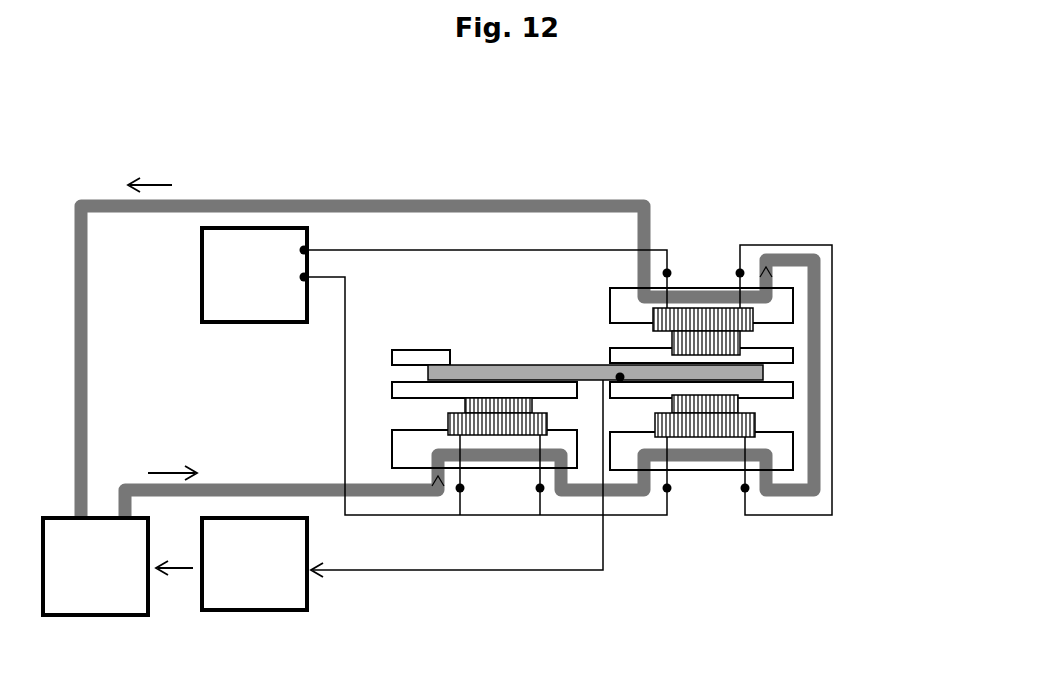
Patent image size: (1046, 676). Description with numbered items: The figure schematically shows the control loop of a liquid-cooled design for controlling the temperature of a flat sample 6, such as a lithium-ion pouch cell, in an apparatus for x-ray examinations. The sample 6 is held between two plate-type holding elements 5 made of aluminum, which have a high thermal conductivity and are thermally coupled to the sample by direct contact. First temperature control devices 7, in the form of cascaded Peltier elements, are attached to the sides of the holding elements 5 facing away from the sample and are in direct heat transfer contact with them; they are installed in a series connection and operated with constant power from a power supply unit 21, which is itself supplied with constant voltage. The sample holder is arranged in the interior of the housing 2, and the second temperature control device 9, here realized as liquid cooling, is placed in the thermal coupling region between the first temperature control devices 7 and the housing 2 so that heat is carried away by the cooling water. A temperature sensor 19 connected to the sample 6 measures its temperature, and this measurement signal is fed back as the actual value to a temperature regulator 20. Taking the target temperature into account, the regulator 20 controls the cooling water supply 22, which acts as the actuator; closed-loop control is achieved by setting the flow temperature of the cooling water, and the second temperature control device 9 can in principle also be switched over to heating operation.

The second temperature control device 9 is at (410, 203).
The first temperature control device 7 is at (710, 330).
The housing 2 is at (793, 304).
The plate-type holding element 5 is at (793, 358).
The sample 6 is at (765, 372).
The temperature sensor 19 is at (618, 375).
The temperature regulator 20 is at (254, 564).
The power supply unit 21 is at (283, 275).
The cooling water supply 22 is at (95, 566).